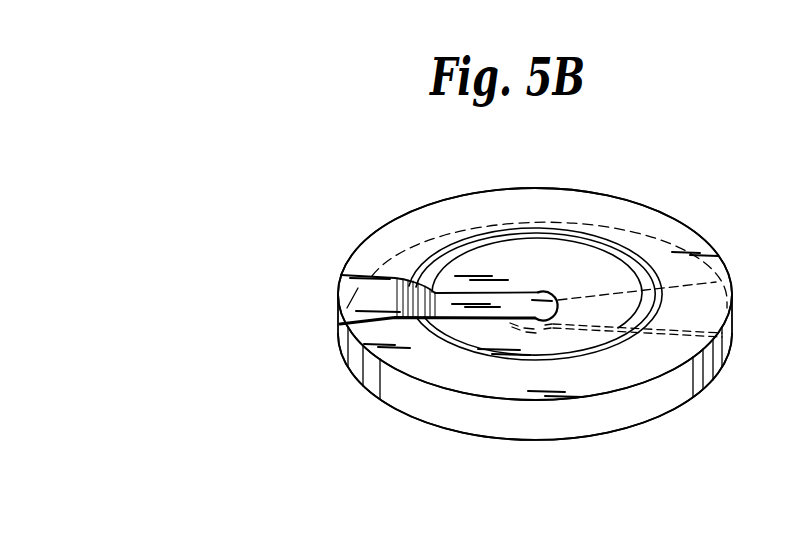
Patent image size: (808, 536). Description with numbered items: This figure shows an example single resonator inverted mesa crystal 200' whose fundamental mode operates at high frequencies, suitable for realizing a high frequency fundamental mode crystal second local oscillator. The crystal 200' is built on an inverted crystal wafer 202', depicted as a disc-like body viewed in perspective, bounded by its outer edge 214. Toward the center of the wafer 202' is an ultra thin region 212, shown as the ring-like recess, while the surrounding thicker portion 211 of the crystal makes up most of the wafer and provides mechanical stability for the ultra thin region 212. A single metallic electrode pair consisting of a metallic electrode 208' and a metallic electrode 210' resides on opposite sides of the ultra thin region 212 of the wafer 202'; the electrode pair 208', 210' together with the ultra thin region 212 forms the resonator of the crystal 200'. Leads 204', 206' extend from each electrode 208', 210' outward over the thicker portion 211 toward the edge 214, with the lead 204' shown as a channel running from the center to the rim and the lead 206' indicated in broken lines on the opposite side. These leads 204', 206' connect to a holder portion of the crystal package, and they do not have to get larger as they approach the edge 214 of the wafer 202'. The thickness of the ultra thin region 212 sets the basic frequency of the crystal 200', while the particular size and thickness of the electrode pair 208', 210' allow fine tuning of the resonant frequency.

The inverted mesa crystal 200' is at (535, 275).
The inverted crystal wafer 202' is at (575, 255).
The lead 204' is at (418, 273).
The lead 206' is at (679, 324).
The metallic electrode 208' is at (542, 284).
The metallic electrode 210' is at (570, 355).
The thicker portion 211 is at (608, 203).
The ultra thin region 212 is at (477, 265).
The edge 214 is at (651, 383).